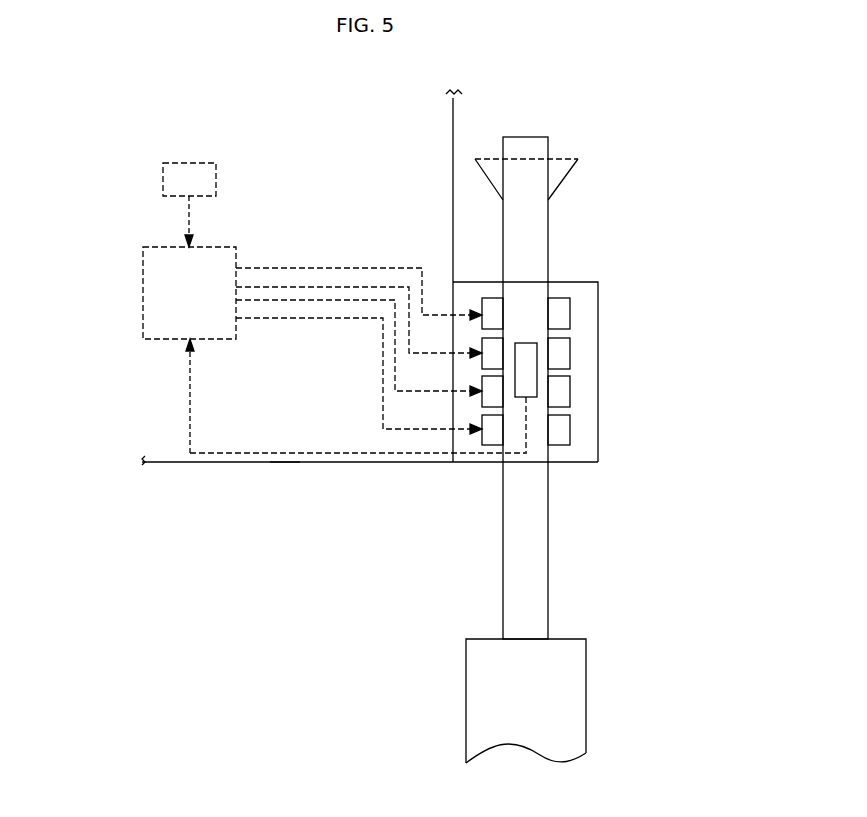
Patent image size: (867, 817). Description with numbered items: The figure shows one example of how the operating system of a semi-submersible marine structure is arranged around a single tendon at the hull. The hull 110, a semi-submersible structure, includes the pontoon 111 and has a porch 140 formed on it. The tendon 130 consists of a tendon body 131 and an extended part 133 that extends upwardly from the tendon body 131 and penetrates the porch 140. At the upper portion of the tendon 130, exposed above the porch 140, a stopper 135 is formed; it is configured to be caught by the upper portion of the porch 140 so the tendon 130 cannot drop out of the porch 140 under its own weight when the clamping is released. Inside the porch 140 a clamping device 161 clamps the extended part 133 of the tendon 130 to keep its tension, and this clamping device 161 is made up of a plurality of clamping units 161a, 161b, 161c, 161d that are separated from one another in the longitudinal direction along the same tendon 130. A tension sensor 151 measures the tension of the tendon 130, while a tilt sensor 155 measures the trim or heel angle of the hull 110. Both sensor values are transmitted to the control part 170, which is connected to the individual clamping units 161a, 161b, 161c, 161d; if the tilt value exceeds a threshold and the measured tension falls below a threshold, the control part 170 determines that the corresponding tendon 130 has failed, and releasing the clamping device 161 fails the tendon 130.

The hull 110 is at (220, 462).
The pontoon 111 is at (285, 462).
The tendon 130 is at (718, 593).
The tendon body 131 is at (587, 663).
The extended part 133 is at (549, 602).
The stopper 135 is at (565, 182).
The porch 140 is at (573, 462).
The tension sensor 151 is at (527, 343).
The tilt sensor 155 is at (163, 182).
The clamping device 161 is at (692, 302).
The clamping unit 161a is at (570, 313).
The clamping unit 161b is at (570, 353).
The clamping unit 161c is at (570, 391).
The clamping unit 161d is at (570, 430).
The control part 170 is at (143, 280).